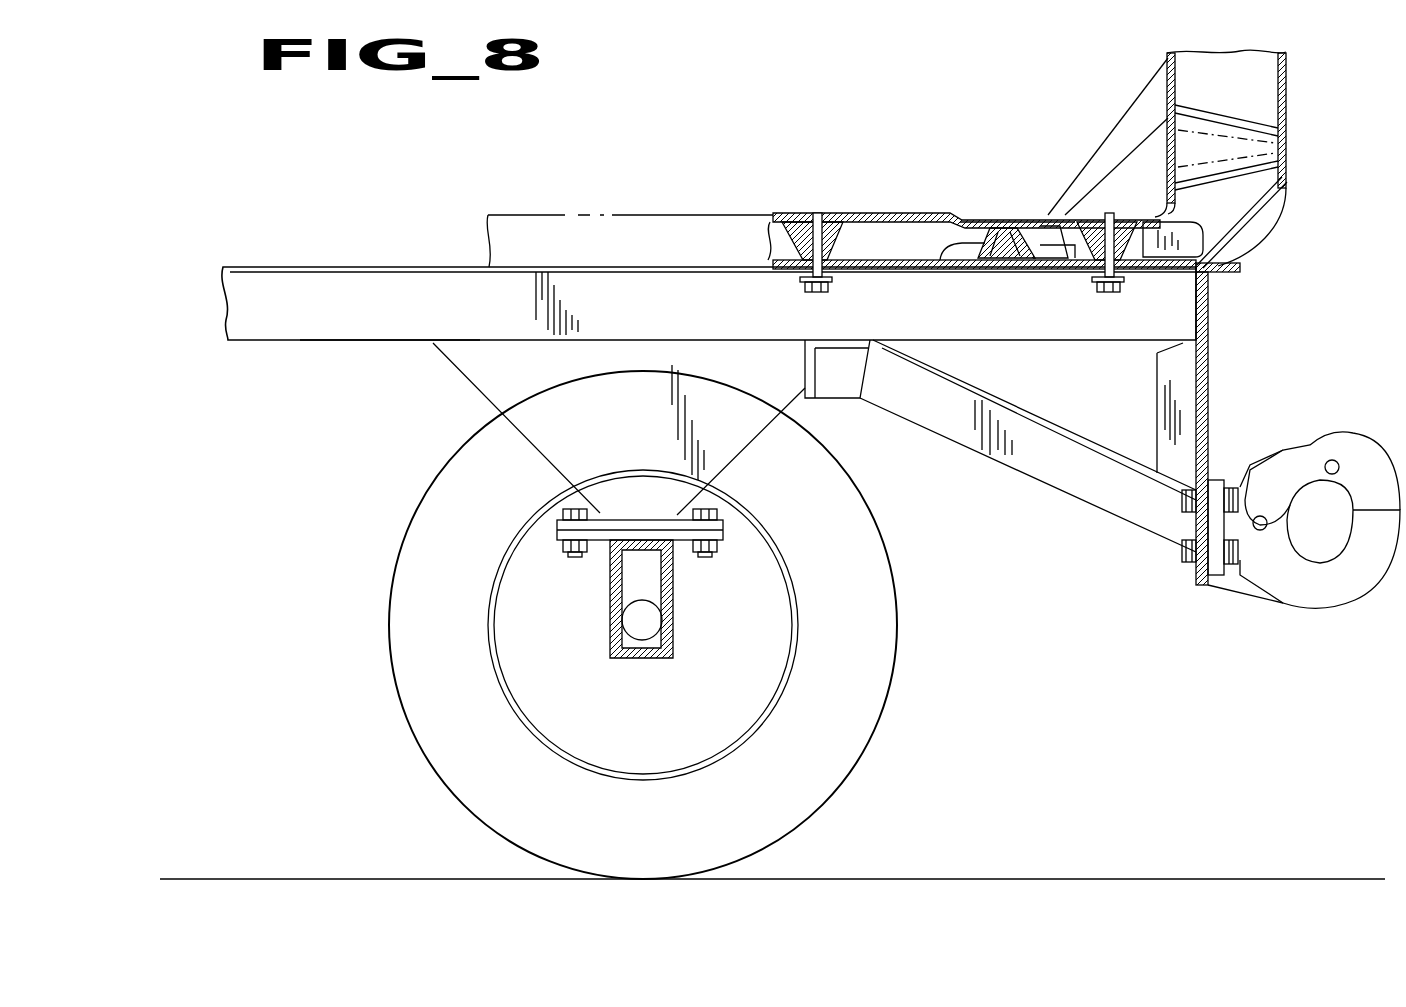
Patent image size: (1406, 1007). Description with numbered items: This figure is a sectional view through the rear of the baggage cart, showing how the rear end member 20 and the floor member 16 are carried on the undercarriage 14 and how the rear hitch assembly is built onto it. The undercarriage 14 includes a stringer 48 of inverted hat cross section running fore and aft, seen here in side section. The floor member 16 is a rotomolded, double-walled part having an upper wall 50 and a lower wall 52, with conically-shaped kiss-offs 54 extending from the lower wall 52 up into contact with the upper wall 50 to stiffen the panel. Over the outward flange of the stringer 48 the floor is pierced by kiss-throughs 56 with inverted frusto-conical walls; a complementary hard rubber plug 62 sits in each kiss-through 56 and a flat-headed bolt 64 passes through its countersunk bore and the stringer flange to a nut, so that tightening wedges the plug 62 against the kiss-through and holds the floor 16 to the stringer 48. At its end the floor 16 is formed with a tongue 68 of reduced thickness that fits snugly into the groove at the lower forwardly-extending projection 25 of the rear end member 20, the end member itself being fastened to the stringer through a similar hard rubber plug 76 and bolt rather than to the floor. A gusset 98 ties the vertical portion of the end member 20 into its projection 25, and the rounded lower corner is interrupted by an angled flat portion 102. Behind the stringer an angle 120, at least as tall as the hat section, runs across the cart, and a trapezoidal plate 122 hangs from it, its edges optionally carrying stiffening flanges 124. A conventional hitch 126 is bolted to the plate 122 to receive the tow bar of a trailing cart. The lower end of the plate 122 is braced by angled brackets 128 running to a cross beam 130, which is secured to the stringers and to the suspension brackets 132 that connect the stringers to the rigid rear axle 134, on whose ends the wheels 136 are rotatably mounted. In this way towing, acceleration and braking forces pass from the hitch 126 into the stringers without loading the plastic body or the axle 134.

The undercarriage 14 is at (222, 325).
The floor member 16 is at (788, 213).
The rear end member 20 is at (1290, 50).
The lower forwardly-extending projection 25 is at (983, 215).
The stringer 48 is at (262, 343).
The upper wall 50 is at (893, 213).
The lower wall 52 is at (905, 268).
The kiss-offs 54 is at (948, 262).
The kiss-throughs 56 is at (782, 242).
The plug 62 is at (830, 213).
The flat-headed bolt 64 is at (808, 283).
The tongue 68 is at (1045, 262).
The hard rubber plug 76 is at (1088, 213).
The gusset 98 is at (1128, 110).
The angled flat portion 102 is at (1120, 155).
The angle 120 is at (1250, 262).
The trapezoidal plate 122 is at (1208, 322).
The stiffening flanges 124 is at (1157, 392).
The hitch 126 is at (1285, 605).
The angled brackets 128 is at (1040, 478).
The cross beam 130 is at (828, 398).
The suspension brackets 132 is at (500, 397).
The rear axle 134 is at (640, 658).
The wheel 136 is at (665, 832).